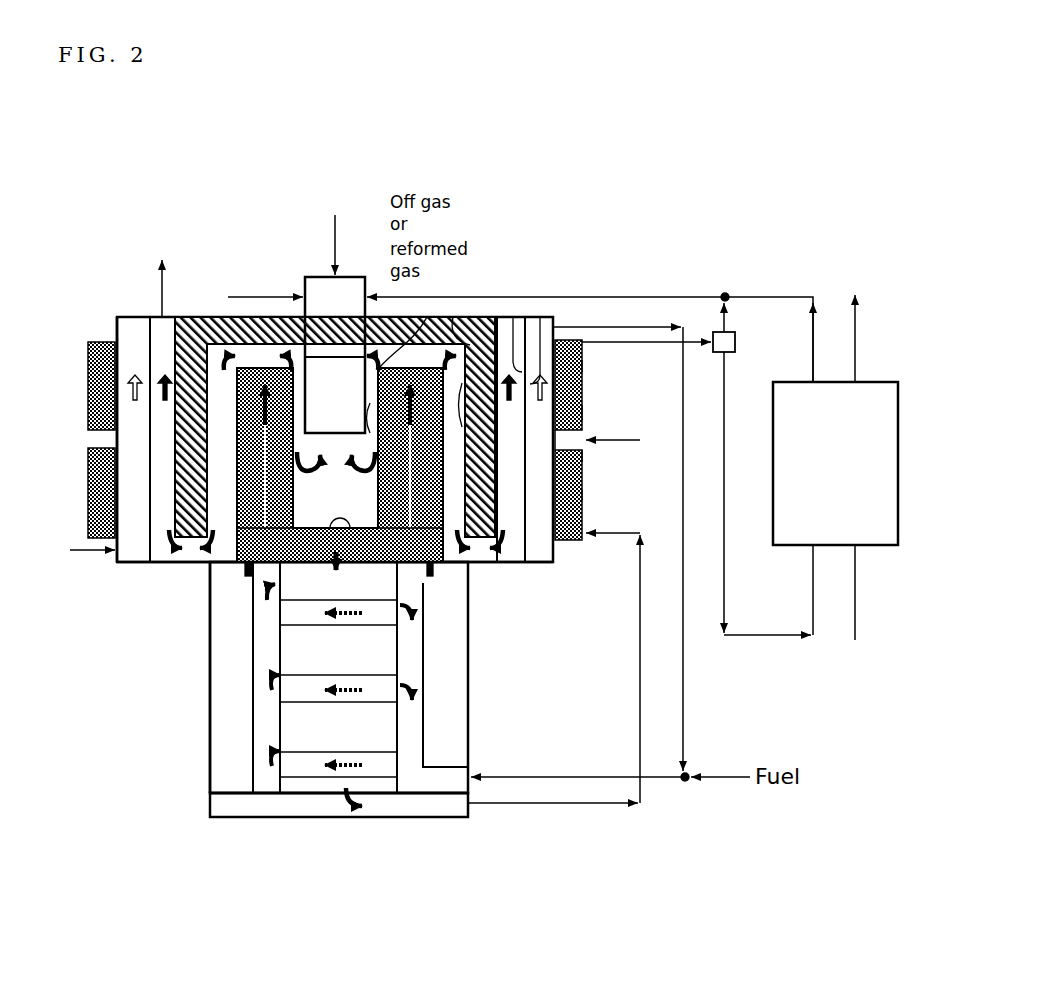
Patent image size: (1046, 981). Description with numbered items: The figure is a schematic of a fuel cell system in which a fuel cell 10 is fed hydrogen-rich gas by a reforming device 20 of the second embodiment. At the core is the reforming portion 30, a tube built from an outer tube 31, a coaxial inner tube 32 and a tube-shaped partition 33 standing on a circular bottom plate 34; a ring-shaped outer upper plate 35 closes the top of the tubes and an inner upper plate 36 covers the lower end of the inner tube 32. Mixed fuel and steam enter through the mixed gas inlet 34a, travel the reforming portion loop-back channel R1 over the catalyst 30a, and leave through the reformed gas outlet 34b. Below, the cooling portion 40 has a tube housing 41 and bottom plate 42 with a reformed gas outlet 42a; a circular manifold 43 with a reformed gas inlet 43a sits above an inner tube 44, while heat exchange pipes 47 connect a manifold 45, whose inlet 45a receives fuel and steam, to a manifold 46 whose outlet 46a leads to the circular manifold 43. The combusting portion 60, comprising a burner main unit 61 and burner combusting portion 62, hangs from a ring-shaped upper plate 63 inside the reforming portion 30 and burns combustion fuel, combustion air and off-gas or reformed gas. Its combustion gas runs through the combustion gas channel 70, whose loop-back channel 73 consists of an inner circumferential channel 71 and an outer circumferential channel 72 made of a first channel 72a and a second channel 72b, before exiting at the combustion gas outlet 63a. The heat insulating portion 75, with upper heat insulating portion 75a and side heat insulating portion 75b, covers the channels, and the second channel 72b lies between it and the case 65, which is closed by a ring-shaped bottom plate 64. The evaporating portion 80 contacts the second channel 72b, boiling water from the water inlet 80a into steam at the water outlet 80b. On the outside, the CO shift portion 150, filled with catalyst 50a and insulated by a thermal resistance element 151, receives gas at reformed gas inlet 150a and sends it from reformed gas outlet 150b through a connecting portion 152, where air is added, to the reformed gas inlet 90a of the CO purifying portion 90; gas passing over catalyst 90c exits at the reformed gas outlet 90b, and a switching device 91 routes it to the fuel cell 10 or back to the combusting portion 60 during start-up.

The fuel cell 10 is at (773, 463).
The reforming device 20 is at (567, 583).
The reforming portion 30 is at (230, 443).
The catalyst 30a is at (235, 430).
The outer tube 31 is at (235, 487).
The inner tube 32 is at (235, 455).
The partition 33 is at (235, 470).
The bottom plate 34 is at (403, 567).
The mixed gas inlet 34a is at (247, 568).
The reformed gas outlet 34b is at (423, 598).
The outer upper plate 35 is at (235, 317).
The inner upper plate 36 is at (403, 580).
The cooling portion 40 is at (156, 672).
The tube housing 41 is at (210, 668).
The bottom plate 42 is at (268, 797).
The reformed gas outlet 42a is at (330, 797).
The circular manifold 43 is at (253, 584).
The reformed gas inlet 43a is at (253, 620).
The inner tube 44 is at (383, 665).
The manifold 45 is at (425, 667).
The inlet 45a is at (477, 775).
The manifold 46 is at (250, 672).
The outlet 46a is at (266, 592).
The heat exchange pipes 47 is at (325, 625).
The catalyst 50a is at (582, 495).
The combusting portion 60 is at (353, 275).
The burner main unit 61 is at (335, 331).
The burner combusting portion 62 is at (335, 407).
The upper plate 63 is at (453, 317).
The combustion gas outlet 63a is at (160, 315).
The bottom plate 64 is at (527, 568).
The case 65 is at (540, 317).
The combustion gas channel 70 is at (607, 396).
The inner circumferential channel 71 is at (427, 317).
The outer circumferential channel 72 is at (600, 225).
The first channel 72a is at (492, 317).
The second channel 72b is at (512, 317).
The loop-back channel 73 is at (633, 212).
The heat insulating portion 75 is at (167, 334).
The upper heat insulating portion 75a is at (208, 317).
The side heat insulating portion 75b is at (117, 358).
The evaporating portion 80 is at (557, 543).
The water inlet 80a is at (112, 558).
The water outlet 80b is at (555, 327).
The CO purifying portion 90 is at (582, 383).
The reformed gas inlet 90a is at (582, 412).
The reformed gas outlet 90b is at (582, 348).
The catalyst 90c is at (582, 365).
The switching device 91 is at (738, 340).
The CO shift portion 150 is at (582, 473).
The reformed gas inlet 150a is at (585, 527).
The reformed gas outlet 150b is at (582, 456).
The thermal resistance element 151 is at (583, 512).
The connecting portion 152 is at (583, 428).
The reforming portion loop-back channel R1 is at (88, 402).